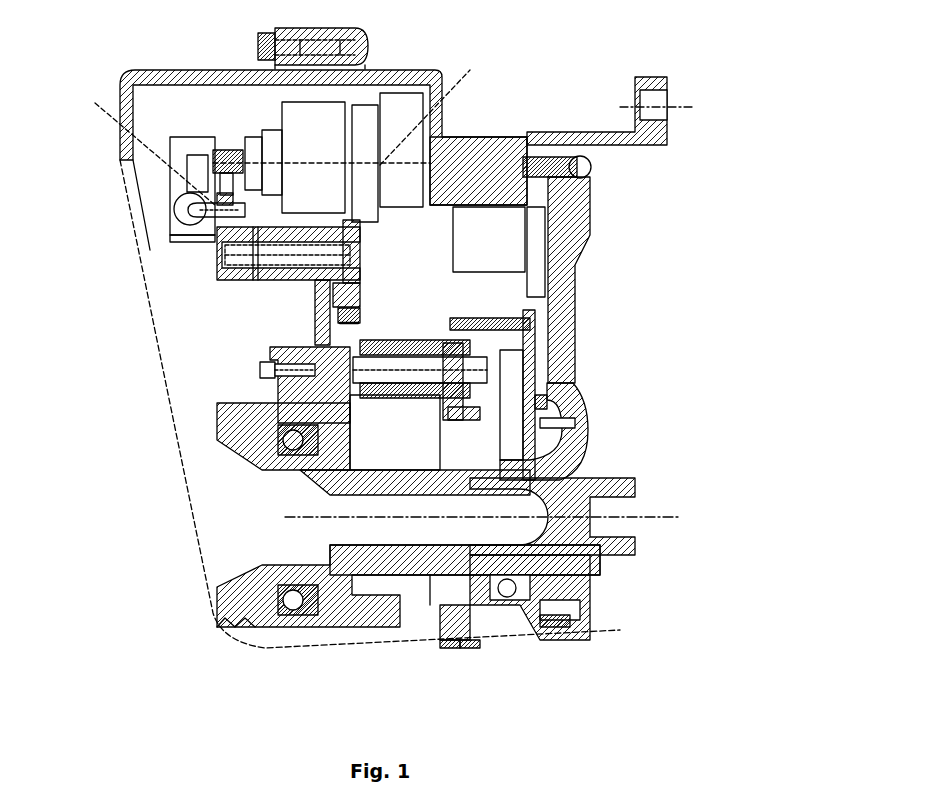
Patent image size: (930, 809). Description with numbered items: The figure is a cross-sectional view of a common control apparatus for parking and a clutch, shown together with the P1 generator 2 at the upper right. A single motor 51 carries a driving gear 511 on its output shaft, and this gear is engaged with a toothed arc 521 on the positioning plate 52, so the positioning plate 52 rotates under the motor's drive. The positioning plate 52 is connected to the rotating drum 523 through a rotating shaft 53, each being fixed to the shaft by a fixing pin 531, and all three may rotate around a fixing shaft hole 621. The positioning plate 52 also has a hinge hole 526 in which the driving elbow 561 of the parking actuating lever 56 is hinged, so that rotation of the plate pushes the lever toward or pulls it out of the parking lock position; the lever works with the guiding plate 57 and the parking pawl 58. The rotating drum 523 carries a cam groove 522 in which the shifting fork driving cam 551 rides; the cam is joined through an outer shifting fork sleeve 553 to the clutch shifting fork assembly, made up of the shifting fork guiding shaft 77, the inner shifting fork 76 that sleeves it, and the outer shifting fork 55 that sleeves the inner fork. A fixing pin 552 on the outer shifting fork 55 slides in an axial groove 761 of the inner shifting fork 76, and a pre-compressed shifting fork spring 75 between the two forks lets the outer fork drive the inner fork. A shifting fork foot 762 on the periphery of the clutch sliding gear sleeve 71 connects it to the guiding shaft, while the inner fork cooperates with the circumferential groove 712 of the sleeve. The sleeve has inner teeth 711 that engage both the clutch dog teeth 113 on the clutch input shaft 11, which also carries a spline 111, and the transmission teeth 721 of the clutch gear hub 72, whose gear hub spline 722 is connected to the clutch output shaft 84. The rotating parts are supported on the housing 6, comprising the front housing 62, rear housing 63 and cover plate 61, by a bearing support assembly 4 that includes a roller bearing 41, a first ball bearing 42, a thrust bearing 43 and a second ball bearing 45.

The P1 generator 2 is at (473, 250).
The bearing support assembly 4 is at (618, 637).
The housing 6 is at (330, 25).
The clutch input shaft 11 is at (570, 428).
The roller bearing 41 is at (557, 627).
The first ball bearing 42 is at (580, 602).
The thrust bearing 43 is at (567, 578).
The second ball bearing 45 is at (217, 633).
The motor 51 is at (360, 48).
The positioning plate 52 is at (222, 245).
The rotating shaft 53 is at (362, 252).
The outer shifting fork 55 is at (382, 340).
The parking actuating lever 56 is at (183, 212).
The guiding plate 57 is at (170, 237).
The parking pawl 58 is at (175, 162).
The cover plate 61 is at (583, 237).
The front housing 62 is at (434, 76).
The rear housing 63 is at (185, 75).
The clutch sliding gear sleeve 71 is at (473, 620).
The clutch gear hub 72 is at (447, 570).
The shifting fork spring 75 is at (400, 388).
The inner shifting fork 76 is at (480, 347).
The shifting fork guiding shaft 77 is at (493, 377).
The clutch output shaft 84 is at (268, 477).
The spline 111 is at (577, 483).
The clutch dog tooth 113 is at (580, 407).
The driving gear 511 is at (228, 150).
The toothed arc 521 is at (470, 73).
The cam groove 522 is at (350, 312).
The rotating drum 523 is at (362, 292).
The hinge hole 526 is at (243, 187).
The fixing pin 531 is at (352, 262).
The shifting fork driving cam 551 is at (300, 350).
The fixing pin 552 is at (383, 345).
The outer shifting fork sleeve 553 is at (228, 401).
The driving elbow 561 is at (190, 206).
The fixing shaft hole 621 is at (290, 282).
The inner tooth 711 is at (460, 580).
The circumferential groove 712 is at (477, 617).
The transmission tooth 721 is at (453, 627).
The gear hub spline 722 is at (455, 490).
The axial groove 761 is at (520, 310).
The shifting fork foot 762 is at (540, 400).